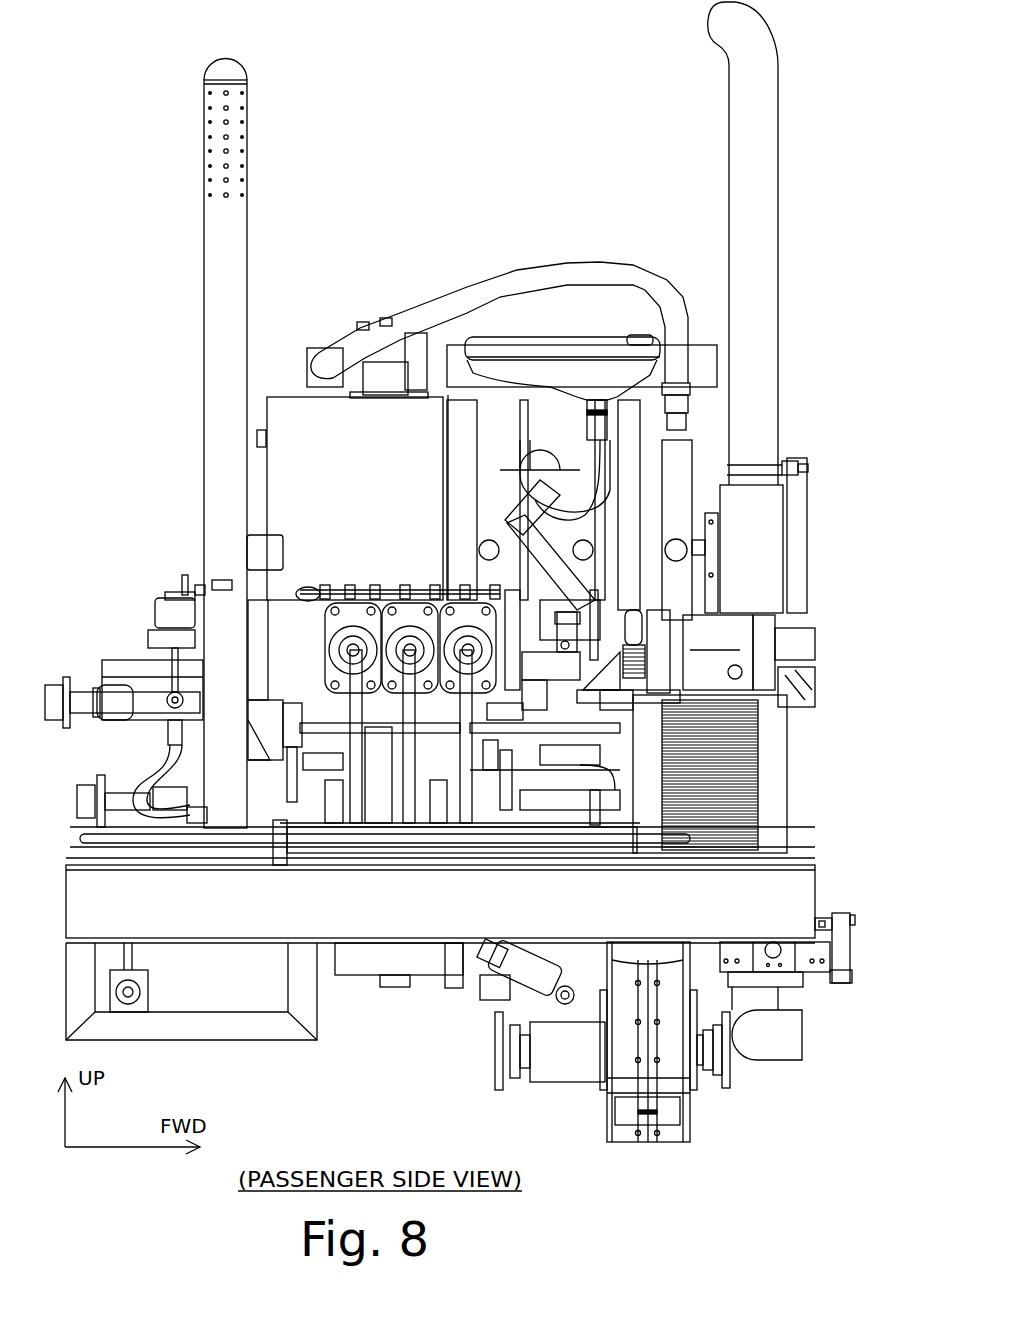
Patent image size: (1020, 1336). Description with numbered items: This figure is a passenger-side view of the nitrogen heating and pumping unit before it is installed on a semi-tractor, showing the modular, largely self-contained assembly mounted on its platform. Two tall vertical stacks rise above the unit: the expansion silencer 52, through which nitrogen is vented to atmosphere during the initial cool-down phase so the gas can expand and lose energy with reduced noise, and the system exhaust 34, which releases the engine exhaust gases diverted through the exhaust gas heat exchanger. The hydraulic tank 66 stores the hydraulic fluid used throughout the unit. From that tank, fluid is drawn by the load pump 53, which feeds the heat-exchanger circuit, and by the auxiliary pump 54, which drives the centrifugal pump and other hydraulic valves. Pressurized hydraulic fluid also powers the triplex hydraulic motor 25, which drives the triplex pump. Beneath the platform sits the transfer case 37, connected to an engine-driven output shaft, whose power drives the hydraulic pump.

The expansion silencer 52 is at (204, 175).
The system exhaust 34 is at (760, 175).
The hydraulic tank 66 is at (302, 396).
The load pump 53 is at (852, 915).
The auxiliary pump 54 is at (413, 975).
The triplex hydraulic motor 25 is at (487, 990).
The transfer case 37 is at (657, 1142).